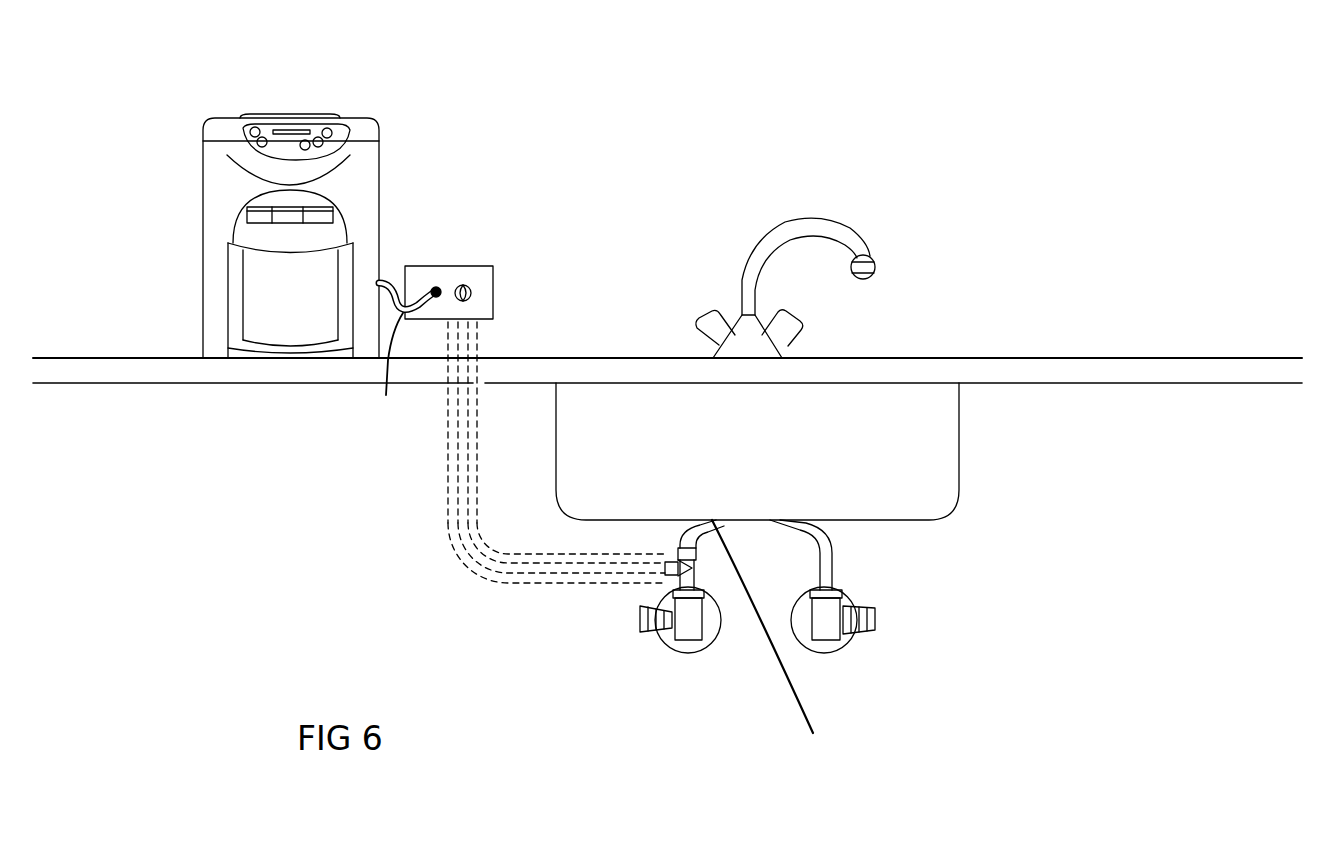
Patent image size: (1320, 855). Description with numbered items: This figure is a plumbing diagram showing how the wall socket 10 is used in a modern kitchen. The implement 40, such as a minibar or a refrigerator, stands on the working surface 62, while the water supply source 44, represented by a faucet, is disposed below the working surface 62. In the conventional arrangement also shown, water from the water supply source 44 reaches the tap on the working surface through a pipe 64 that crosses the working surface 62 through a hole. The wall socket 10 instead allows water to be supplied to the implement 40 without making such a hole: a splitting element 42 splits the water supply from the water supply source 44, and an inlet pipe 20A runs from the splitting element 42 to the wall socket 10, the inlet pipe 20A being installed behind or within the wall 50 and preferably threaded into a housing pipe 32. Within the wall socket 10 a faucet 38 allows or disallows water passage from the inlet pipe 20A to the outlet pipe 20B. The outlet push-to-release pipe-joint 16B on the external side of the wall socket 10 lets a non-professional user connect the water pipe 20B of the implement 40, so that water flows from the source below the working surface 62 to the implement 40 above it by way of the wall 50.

The wall socket 10 is at (513, 293).
The outlet push-to-release pipe-joint 16B is at (437, 288).
The inlet pipe 20A is at (460, 450).
The outlet pipe 20B is at (382, 368).
The housing pipe 32 is at (463, 562).
The faucet 38 is at (471, 291).
The implement 40 is at (330, 116).
The splitting element 42 is at (697, 565).
The water supply source 44 is at (690, 625).
The wall 50 is at (577, 164).
The working surface 62 is at (1013, 358).
The pipe 64 is at (773, 642).